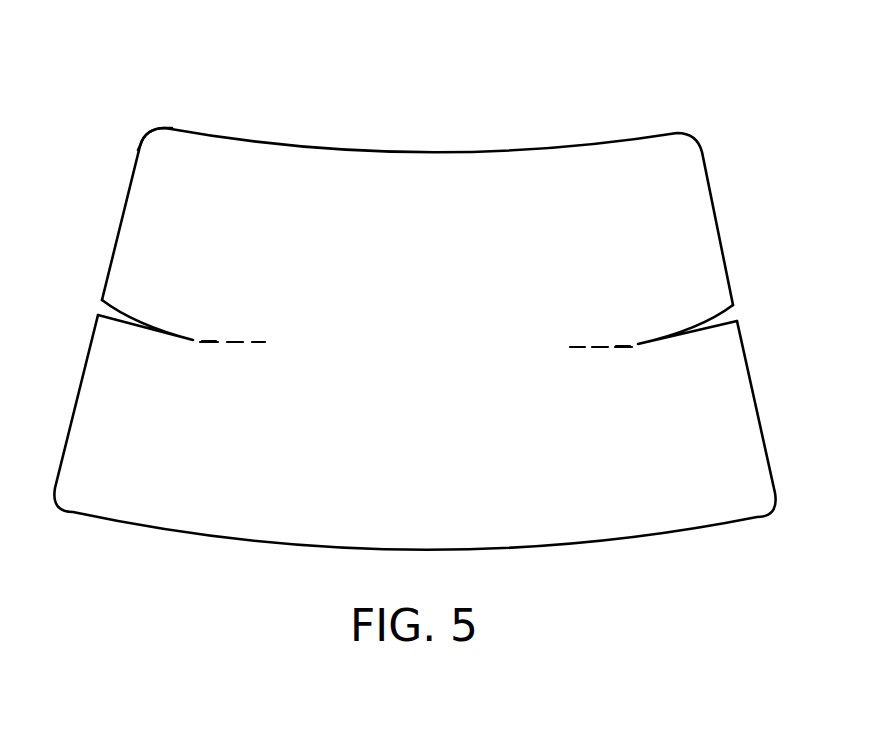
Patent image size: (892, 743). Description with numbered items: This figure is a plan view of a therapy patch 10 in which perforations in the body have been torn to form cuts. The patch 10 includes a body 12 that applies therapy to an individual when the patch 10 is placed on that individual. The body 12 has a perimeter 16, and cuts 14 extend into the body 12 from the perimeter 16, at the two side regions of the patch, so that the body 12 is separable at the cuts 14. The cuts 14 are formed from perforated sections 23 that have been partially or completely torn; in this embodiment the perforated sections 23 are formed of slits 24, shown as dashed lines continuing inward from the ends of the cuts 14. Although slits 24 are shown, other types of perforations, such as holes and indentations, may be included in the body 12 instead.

The patch 10 is at (678, 78).
The body 12 is at (672, 208).
The cut 14 is at (120, 325).
The perimeter 16 is at (168, 128).
The perforated section 23 is at (236, 341).
The slit 24 is at (210, 346).